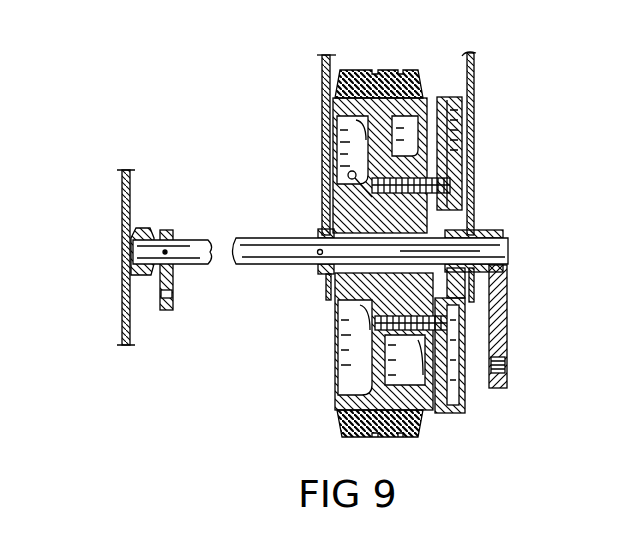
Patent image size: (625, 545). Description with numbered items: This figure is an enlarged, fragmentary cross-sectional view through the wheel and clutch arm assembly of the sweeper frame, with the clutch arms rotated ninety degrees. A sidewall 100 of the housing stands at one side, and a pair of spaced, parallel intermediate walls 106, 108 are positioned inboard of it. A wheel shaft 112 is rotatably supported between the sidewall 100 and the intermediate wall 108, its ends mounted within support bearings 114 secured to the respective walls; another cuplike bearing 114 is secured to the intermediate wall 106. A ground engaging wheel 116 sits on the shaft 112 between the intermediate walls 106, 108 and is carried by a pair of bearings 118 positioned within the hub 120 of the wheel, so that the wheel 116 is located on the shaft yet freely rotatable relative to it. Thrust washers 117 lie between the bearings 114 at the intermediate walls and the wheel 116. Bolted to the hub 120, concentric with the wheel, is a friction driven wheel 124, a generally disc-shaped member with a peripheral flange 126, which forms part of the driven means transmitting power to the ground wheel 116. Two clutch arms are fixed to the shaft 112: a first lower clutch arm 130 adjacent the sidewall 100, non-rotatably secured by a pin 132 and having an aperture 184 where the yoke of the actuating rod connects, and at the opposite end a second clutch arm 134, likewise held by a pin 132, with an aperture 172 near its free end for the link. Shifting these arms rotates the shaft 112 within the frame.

The sidewall 100 is at (122, 196).
The intermediate wall 106 is at (322, 100).
The intermediate wall 108 is at (475, 92).
The wheel shaft 112 is at (258, 238).
The support bearing 114 is at (138, 229).
The ground engaging wheel 116 is at (360, 72).
The thrust washer 117 is at (324, 206).
The bearing 118 is at (378, 277).
The hub 120 is at (391, 165).
The friction driven wheel 124 is at (449, 88).
The peripheral flange 126 is at (462, 412).
The first lower clutch arm 130 is at (160, 282).
The pin 132 is at (166, 251).
The second lower clutch arm 134 is at (500, 325).
The aperture 172 is at (506, 366).
The aperture 184 is at (174, 294).